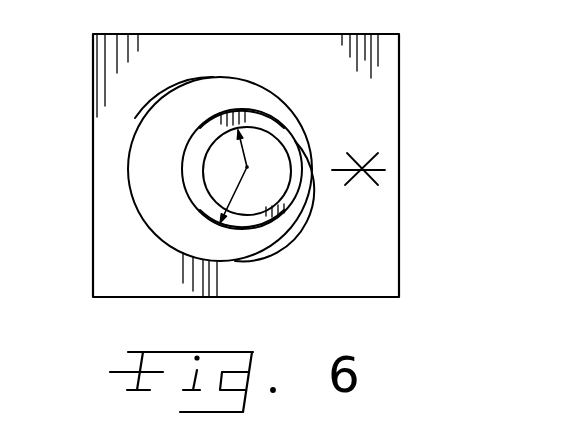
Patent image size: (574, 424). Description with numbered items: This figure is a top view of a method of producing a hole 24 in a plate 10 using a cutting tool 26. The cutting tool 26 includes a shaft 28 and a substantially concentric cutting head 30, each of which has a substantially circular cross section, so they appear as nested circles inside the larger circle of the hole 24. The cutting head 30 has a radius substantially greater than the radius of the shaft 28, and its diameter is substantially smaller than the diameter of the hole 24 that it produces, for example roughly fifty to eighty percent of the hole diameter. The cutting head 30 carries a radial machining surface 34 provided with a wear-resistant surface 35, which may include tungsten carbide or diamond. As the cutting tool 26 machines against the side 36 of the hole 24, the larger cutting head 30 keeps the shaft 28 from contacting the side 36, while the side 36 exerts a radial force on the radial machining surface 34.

The plate 10 is at (388, 62).
The hole 24 is at (168, 222).
The cutting tool 26 is at (307, 233).
The shaft 28 is at (282, 157).
The cutting head 30 is at (250, 228).
The radial machining surface 34 is at (183, 162).
The wear-resistant surface 35 is at (248, 108).
The side of hole 36 is at (160, 101).